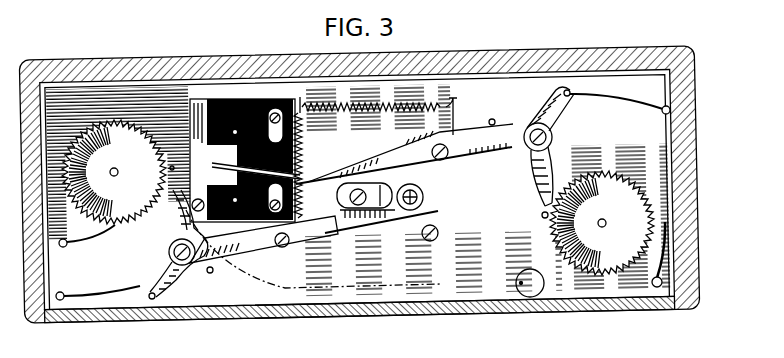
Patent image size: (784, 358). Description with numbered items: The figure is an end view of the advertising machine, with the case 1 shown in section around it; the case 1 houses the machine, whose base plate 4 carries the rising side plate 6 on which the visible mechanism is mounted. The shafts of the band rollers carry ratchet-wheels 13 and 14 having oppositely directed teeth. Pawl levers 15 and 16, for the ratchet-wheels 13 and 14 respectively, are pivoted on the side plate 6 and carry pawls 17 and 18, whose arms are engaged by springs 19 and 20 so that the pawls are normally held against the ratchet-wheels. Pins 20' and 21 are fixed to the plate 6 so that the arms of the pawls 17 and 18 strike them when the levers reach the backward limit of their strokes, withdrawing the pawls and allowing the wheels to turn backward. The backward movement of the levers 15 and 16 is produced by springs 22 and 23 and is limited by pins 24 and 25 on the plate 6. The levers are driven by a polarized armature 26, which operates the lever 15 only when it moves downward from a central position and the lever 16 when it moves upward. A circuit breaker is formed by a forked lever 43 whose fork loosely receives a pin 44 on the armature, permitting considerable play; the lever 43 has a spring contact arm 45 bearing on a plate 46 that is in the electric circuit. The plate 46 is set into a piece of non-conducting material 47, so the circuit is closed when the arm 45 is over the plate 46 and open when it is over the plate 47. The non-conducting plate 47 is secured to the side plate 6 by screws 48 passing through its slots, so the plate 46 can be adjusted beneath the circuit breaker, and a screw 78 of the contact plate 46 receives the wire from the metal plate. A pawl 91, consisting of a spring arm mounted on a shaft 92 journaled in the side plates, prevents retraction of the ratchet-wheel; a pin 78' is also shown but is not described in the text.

The case 1 is at (688, 98).
The base plate 4 is at (360, 317).
The side plate 6 is at (655, 143).
The ratchet-wheel 13 is at (114, 172).
The ratchet-wheel 14 is at (602, 223).
The pawl lever 15 is at (313, 249).
The pawl lever 16 is at (404, 154).
The pawl 17 is at (173, 165).
The pawl 18 is at (551, 157).
The spring 19 is at (104, 295).
The spring 20 is at (620, 100).
The pin 20' is at (149, 321).
The pin 21 is at (570, 90).
The spring 22 is at (332, 168).
The spring 23 is at (367, 109).
The pin 24 is at (212, 273).
The pin 25 is at (494, 120).
The polarized armature 26 is at (352, 212).
The forked lever 43 is at (424, 194).
The pin 44 is at (368, 214).
The spring contact arm 45 is at (336, 174).
The plate 46 is at (245, 164).
The plate of non-conducting material 47 is at (237, 99).
The screws 48 is at (271, 108).
The screw 78 is at (178, 216).
The pin 78' is at (529, 223).
The pawl 91 is at (699, 238).
The shaft 92 is at (64, 248).